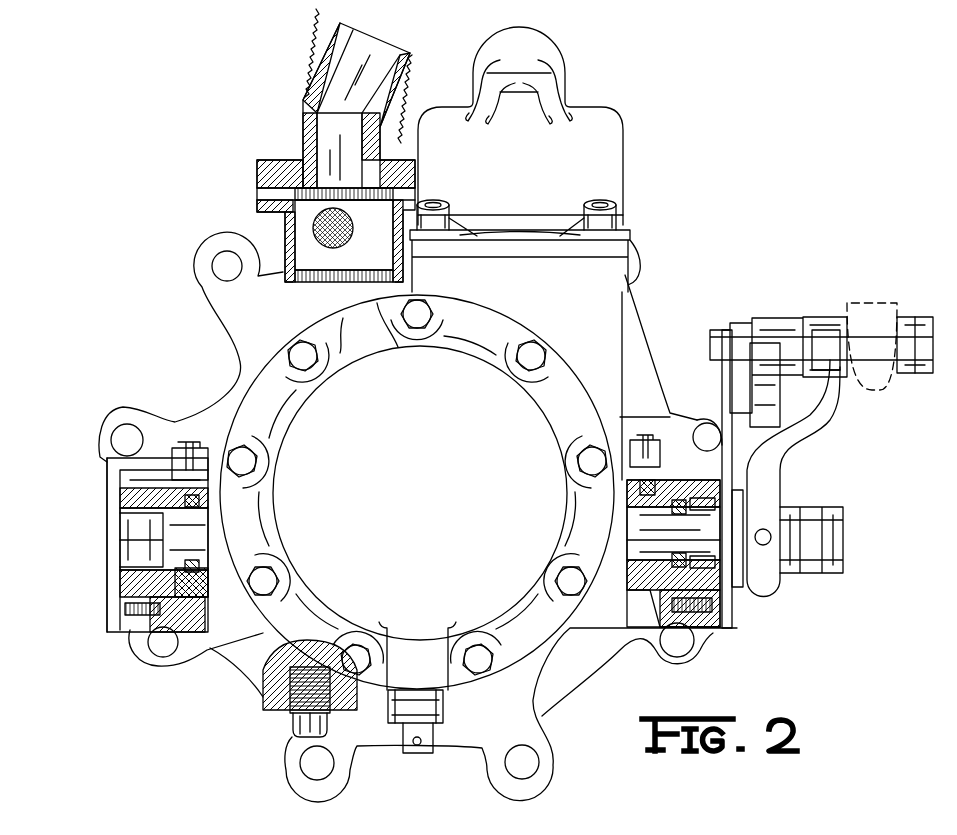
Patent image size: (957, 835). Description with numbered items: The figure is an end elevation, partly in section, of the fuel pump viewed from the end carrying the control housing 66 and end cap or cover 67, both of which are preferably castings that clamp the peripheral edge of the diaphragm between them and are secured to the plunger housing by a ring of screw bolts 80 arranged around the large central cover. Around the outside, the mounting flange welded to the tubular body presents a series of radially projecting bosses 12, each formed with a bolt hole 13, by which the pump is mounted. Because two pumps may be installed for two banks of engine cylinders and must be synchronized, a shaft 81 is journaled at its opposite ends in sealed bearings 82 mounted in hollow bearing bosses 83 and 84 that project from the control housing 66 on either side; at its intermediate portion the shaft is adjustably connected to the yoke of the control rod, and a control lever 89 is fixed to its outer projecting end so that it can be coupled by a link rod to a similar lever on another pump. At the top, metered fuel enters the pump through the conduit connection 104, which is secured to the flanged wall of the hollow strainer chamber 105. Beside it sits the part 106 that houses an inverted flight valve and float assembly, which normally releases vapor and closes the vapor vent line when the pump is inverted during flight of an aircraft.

The radially projecting bosses 12 is at (210, 288).
The bolt holes 13 is at (218, 263).
The control housing 66 is at (636, 367).
The end cap or cover 67 is at (432, 414).
The screw bolts 80 is at (597, 448).
The shaft 81 is at (708, 540).
The sealed bearings 82 is at (650, 480).
The hollow bearing boss 83 is at (716, 634).
The hollow bearing boss 84 is at (153, 633).
The control lever 89 is at (770, 462).
The conduit connection 104 is at (316, 95).
The hollow strainer chamber 105 is at (286, 226).
The inverted flight valve and float assembly housing 106 is at (604, 161).